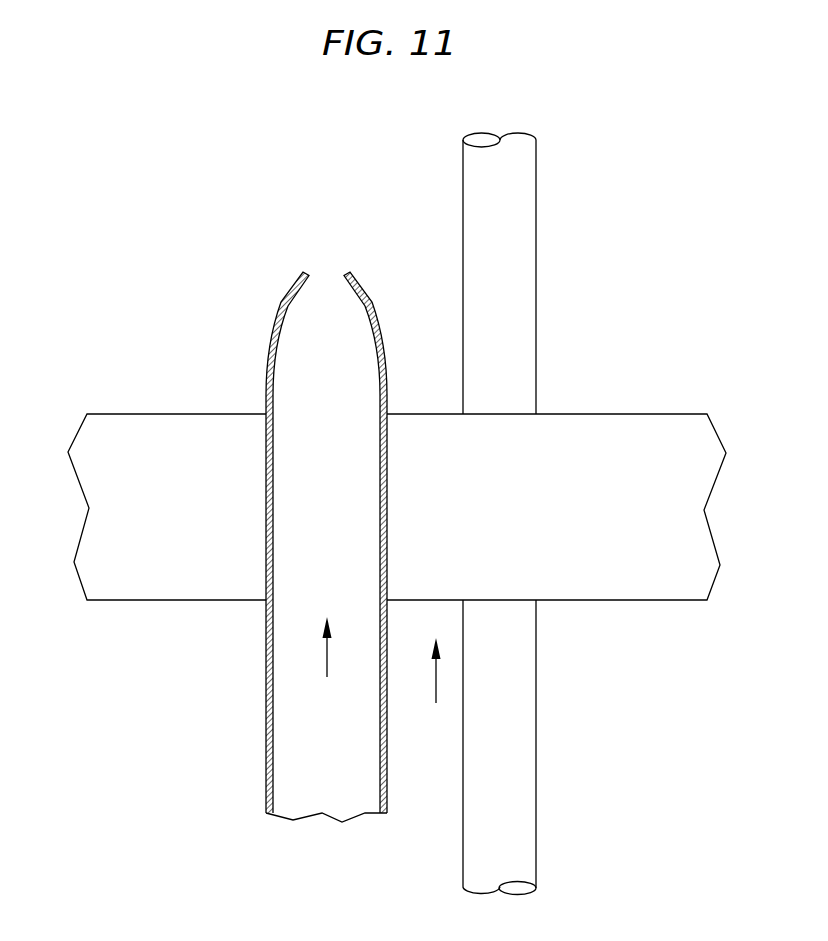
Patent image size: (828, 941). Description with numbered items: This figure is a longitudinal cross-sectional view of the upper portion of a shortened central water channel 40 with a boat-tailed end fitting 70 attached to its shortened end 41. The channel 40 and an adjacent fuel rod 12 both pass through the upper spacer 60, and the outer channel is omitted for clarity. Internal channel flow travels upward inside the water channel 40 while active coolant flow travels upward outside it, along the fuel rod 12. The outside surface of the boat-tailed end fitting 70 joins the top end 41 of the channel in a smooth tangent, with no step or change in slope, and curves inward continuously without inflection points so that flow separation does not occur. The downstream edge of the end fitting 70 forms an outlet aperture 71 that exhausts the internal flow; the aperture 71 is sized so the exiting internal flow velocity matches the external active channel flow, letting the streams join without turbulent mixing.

The fuel rod 12 is at (527, 648).
The shortened central water channel 40 is at (316, 515).
The shortened end 41 is at (285, 505).
The upper spacer 60 is at (622, 425).
The boat-tailed end fitting 70 is at (300, 296).
The aperture 71 is at (328, 277).